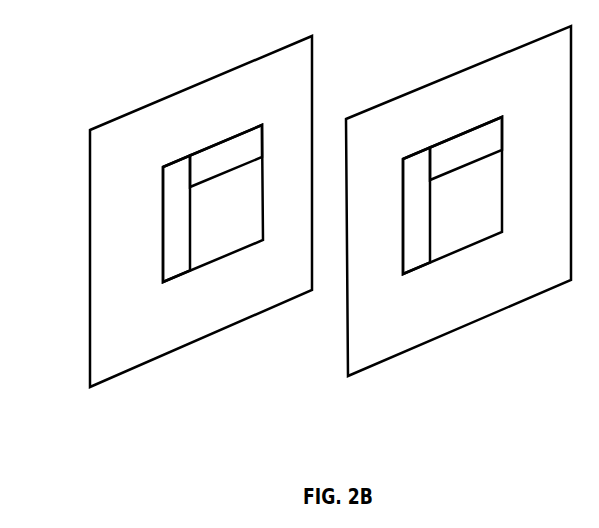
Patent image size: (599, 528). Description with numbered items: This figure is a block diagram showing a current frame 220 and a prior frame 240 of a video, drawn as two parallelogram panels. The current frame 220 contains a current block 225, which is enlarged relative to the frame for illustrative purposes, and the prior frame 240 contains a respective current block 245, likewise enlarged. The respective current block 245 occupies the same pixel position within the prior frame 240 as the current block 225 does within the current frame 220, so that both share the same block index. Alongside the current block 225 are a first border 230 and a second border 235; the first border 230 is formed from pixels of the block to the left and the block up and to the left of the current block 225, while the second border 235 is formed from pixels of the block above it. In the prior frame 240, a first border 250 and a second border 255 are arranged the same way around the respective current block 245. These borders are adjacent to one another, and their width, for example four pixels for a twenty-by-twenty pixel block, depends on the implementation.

The current frame 220 is at (346, 360).
The current block 225 is at (477, 240).
The first border 230 is at (413, 215).
The second border 235 is at (457, 147).
The prior frame 240 is at (89, 360).
The respective current block 245 is at (232, 249).
The first border 250 is at (173, 223).
The second border 255 is at (224, 150).